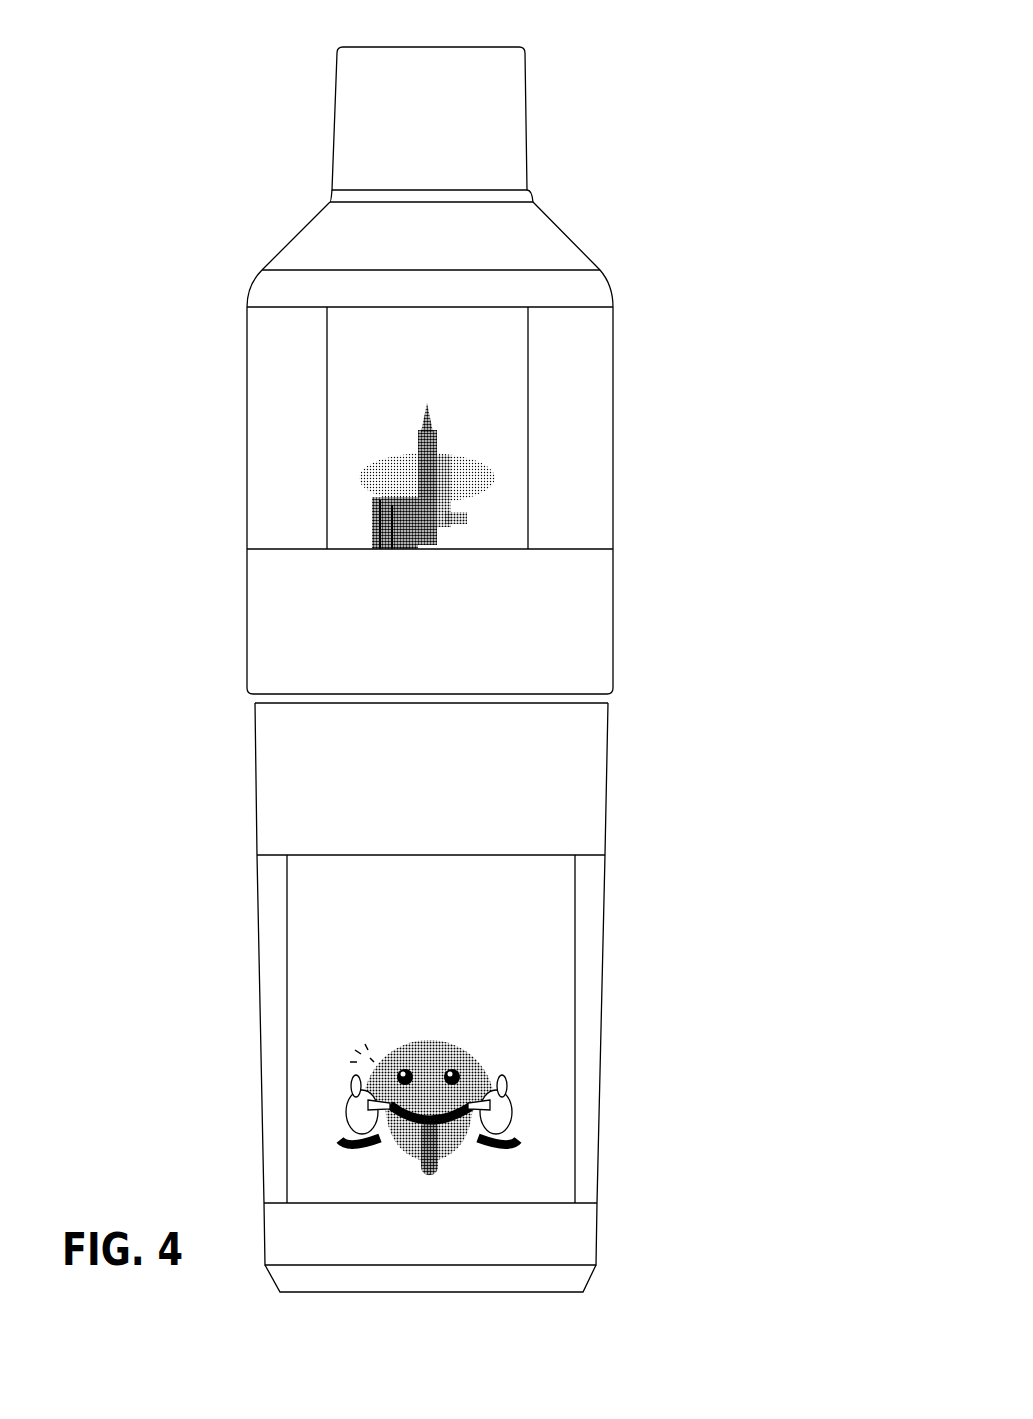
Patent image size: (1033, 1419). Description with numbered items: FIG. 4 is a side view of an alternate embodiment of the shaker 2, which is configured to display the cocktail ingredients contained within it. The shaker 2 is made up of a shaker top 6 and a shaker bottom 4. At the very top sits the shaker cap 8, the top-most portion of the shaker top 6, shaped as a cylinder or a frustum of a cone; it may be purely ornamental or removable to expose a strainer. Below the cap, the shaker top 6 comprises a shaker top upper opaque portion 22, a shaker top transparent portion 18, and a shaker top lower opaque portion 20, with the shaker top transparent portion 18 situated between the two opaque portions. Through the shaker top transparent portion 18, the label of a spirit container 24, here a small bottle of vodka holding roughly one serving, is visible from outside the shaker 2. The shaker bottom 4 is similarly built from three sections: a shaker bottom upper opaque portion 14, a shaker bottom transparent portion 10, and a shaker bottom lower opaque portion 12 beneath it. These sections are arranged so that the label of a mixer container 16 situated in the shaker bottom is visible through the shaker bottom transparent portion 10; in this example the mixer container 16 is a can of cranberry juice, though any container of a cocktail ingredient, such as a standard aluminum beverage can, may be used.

The shaker 2 is at (694, 155).
The shaker bottom 4 is at (716, 845).
The shaker top 6 is at (694, 372).
The shaker cap 8 is at (525, 107).
The shaker bottom transparent portion 10 is at (604, 932).
The shaker bottom lower opaque portion 12 is at (596, 1241).
The shaker bottom upper opaque portion 14 is at (608, 762).
The mixer container 16 is at (420, 899).
The shaker top transparent portion 18 is at (613, 500).
The shaker top lower opaque portion 20 is at (613, 642).
The shaker top upper opaque portion 22 is at (566, 245).
The spirit container 24 is at (506, 442).